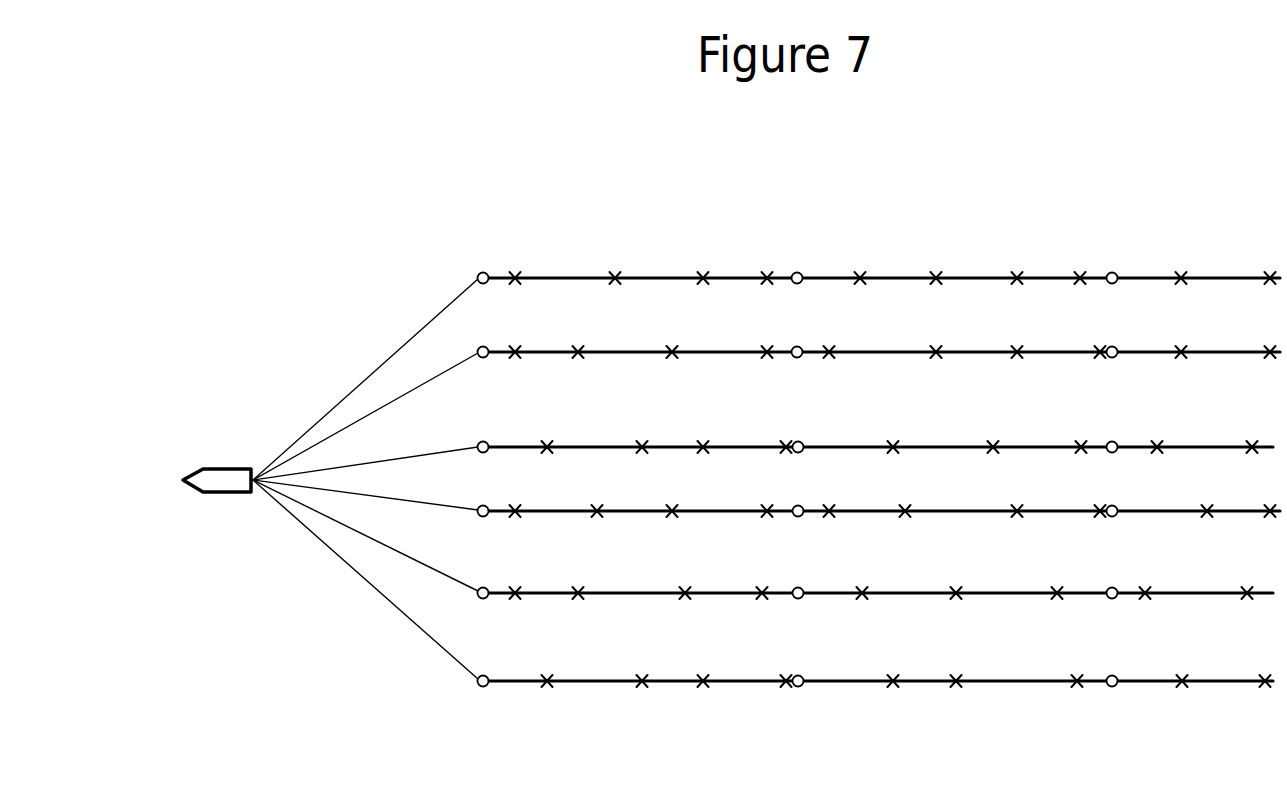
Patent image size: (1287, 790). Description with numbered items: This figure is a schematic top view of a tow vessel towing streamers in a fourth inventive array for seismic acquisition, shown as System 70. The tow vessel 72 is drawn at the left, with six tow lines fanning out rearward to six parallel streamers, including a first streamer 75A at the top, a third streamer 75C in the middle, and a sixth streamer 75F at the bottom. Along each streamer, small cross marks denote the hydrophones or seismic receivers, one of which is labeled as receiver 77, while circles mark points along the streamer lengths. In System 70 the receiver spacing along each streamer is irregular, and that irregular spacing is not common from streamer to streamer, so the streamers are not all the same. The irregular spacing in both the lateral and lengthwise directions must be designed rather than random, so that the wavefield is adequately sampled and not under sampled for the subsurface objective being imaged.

The system 70 is at (1043, 239).
The survey vessel 72 is at (201, 482).
The streamer 75A is at (561, 278).
The streamer 75C is at (573, 447).
The streamer 75F is at (580, 681).
The seismic sensor 77 is at (893, 441).